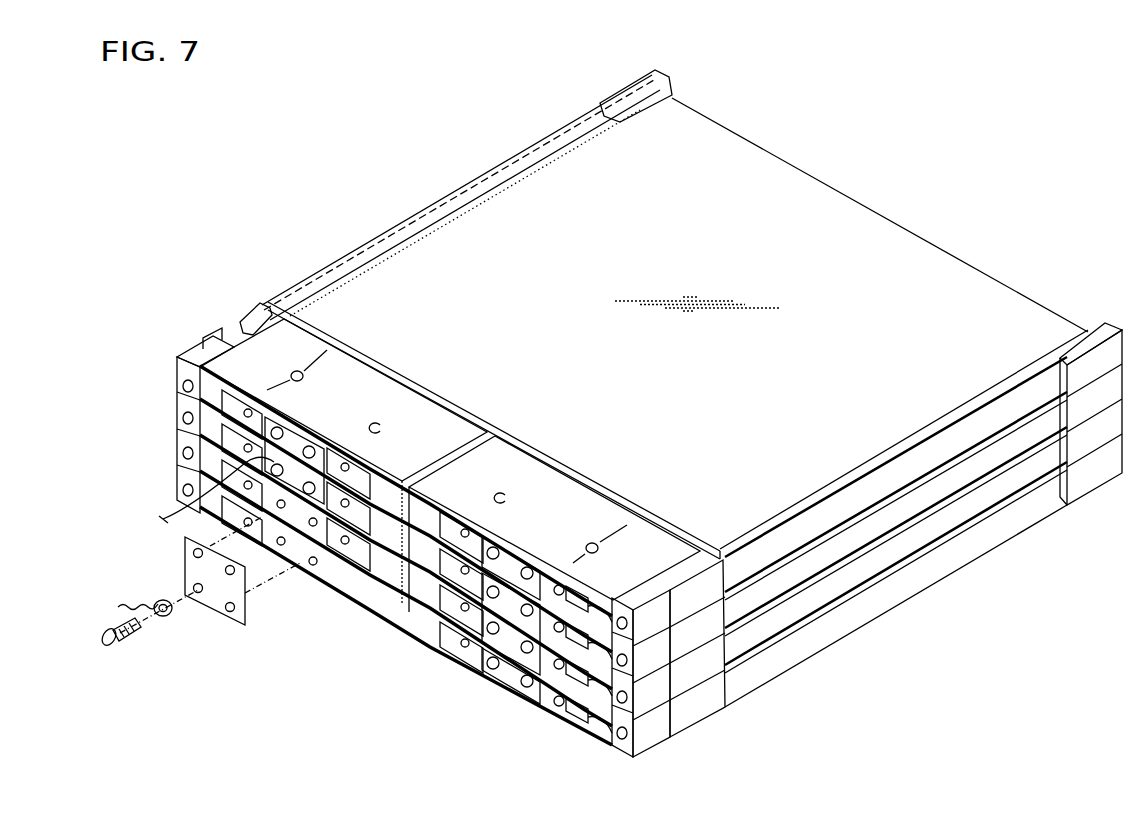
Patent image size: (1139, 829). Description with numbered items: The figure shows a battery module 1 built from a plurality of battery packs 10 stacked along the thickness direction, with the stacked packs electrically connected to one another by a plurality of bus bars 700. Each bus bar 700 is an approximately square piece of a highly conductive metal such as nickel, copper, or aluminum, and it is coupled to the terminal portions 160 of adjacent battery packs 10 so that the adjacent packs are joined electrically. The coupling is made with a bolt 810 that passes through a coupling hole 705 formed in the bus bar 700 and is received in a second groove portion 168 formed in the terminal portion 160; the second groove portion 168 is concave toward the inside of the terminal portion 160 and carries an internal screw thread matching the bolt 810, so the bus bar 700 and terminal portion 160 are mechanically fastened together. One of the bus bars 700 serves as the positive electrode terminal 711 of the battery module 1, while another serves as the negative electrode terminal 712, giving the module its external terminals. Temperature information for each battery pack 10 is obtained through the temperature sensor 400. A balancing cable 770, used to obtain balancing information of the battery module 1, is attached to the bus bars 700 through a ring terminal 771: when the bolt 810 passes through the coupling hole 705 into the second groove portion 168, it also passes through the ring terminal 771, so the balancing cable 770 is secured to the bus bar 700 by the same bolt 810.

The battery module 1 is at (967, 220).
The battery pack 10 is at (885, 563).
The terminal portion 160 is at (543, 575).
The second groove portion 168 is at (313, 566).
The temperature sensor 400 is at (572, 706).
The bus bar 700 is at (288, 418).
The positive electrode terminal 711 is at (478, 540).
The negative electrode terminal 712 is at (510, 673).
The coupling hole 705 is at (231, 612).
The balancing cable 770 is at (165, 518).
The ring terminal 771 is at (165, 618).
The bolt 810 is at (103, 636).